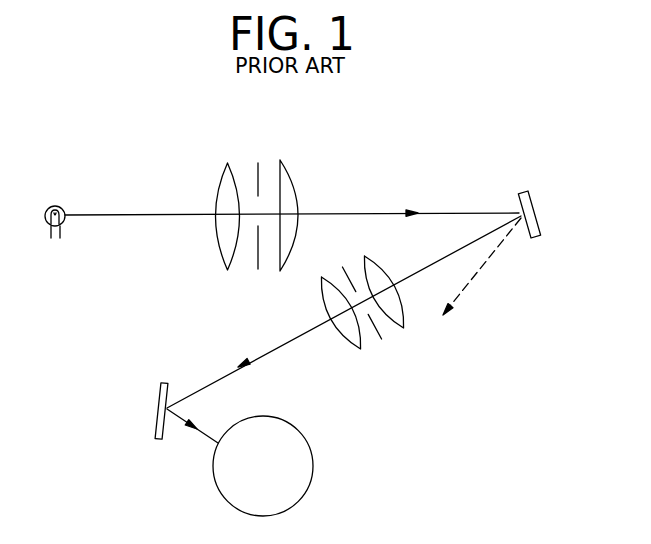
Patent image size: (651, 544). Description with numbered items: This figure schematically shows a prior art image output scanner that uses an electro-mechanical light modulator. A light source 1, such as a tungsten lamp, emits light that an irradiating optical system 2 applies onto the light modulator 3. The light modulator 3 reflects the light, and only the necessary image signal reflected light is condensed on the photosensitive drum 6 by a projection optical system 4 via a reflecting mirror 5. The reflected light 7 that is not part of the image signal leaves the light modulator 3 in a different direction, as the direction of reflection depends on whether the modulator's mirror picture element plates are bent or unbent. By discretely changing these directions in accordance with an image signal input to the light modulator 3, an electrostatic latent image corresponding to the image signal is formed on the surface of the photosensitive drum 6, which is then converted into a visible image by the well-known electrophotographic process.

The light source 1 is at (55, 206).
The irradiating optical system 2 is at (303, 144).
The light modulator 3 is at (540, 212).
The projection optical system 4 is at (369, 324).
The reflecting mirror 5 is at (157, 401).
The photosensitive drum 6 is at (297, 470).
The reflected light 7 is at (483, 265).